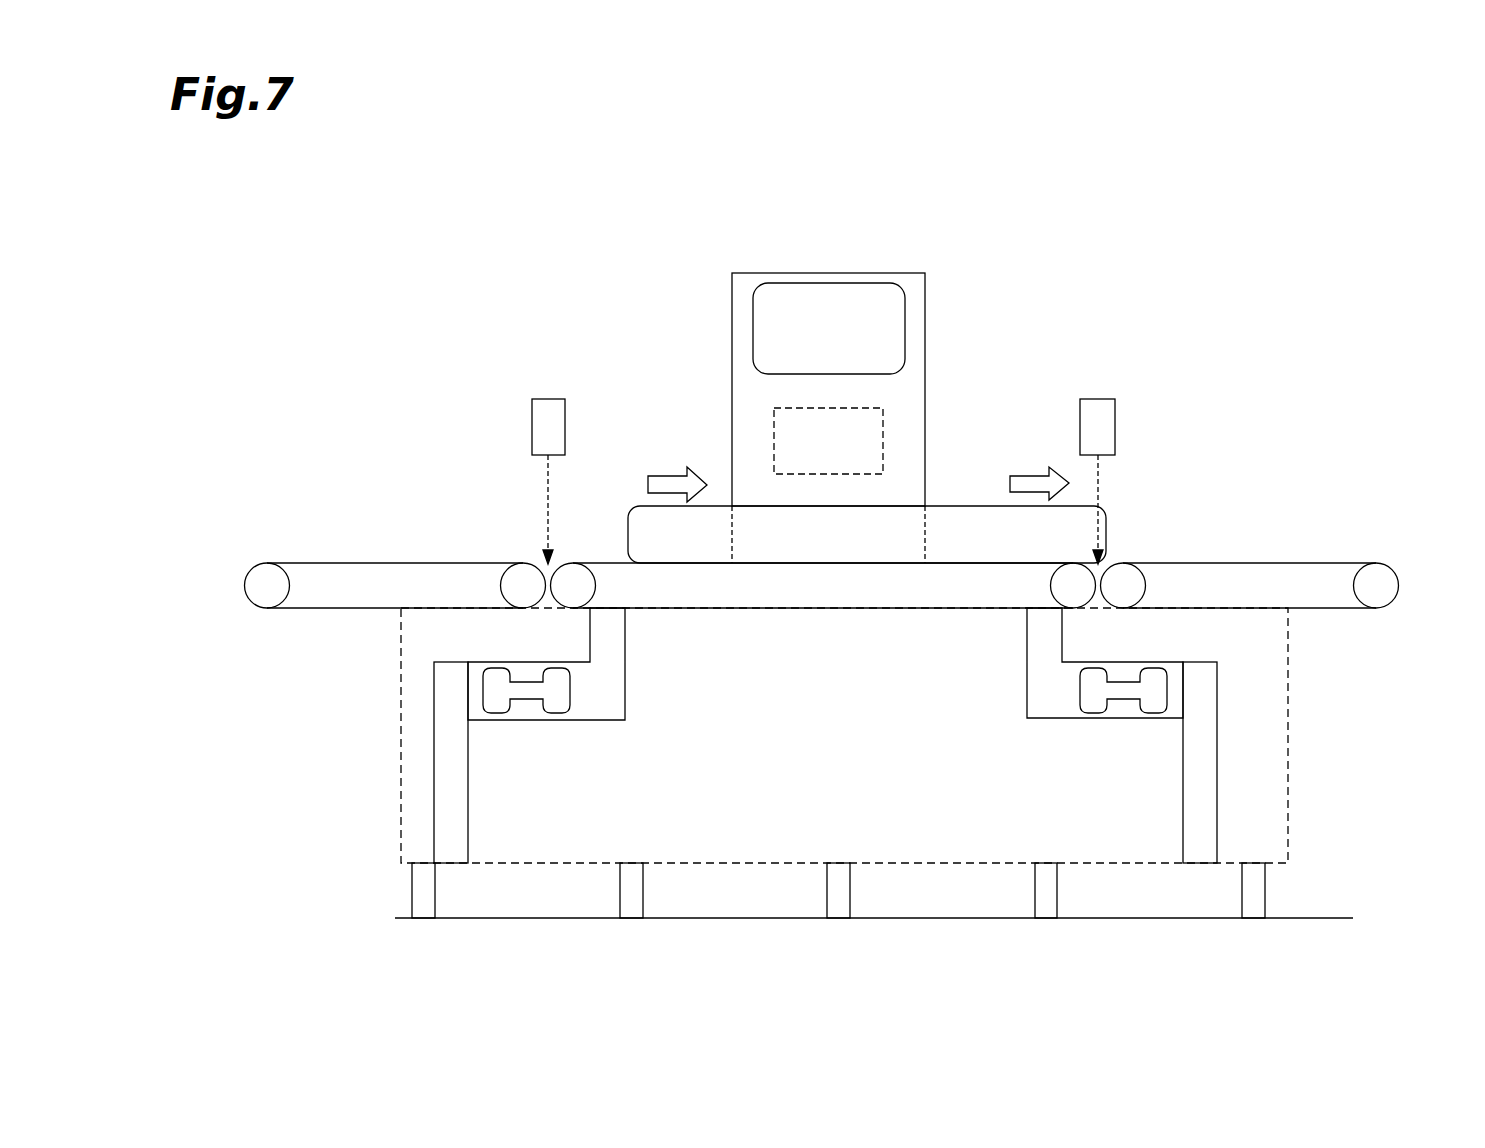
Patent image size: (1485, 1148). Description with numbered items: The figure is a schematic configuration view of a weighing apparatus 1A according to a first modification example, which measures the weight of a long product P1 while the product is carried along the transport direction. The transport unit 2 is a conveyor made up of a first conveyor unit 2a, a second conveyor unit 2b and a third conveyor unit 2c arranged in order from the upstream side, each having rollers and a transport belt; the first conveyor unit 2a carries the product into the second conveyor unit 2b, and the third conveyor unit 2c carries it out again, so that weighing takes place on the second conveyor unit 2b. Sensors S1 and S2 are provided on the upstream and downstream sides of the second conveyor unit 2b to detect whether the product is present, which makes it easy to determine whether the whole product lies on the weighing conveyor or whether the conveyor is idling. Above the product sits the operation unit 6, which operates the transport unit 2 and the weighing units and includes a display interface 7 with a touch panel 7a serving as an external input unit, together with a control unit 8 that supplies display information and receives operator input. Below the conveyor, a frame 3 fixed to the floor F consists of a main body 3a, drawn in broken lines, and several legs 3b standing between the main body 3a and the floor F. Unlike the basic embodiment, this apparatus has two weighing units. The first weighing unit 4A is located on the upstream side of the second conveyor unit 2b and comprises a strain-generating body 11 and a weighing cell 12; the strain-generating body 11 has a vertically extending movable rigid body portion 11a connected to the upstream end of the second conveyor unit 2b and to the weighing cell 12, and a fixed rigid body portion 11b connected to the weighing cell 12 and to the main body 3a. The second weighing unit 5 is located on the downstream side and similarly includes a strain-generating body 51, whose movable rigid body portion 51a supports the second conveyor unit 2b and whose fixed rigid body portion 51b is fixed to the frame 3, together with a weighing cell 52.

The weighing apparatus 1A is at (1224, 250).
The transport unit 2 is at (822, 535).
The first conveyor unit 2a is at (372, 580).
The second conveyor unit 2b is at (960, 582).
The third conveyor unit 2c is at (1268, 580).
The long product P1 is at (628, 530).
The operation unit 6 is at (907, 283).
The display interface 7 is at (817, 300).
The touch panel 7a is at (829, 328).
The control unit 8 is at (773, 425).
The sensor S1 is at (548, 399).
The sensor S2 is at (1098, 399).
The frame 3 is at (1366, 732).
The main body 3a is at (1290, 743).
The legs 3b is at (1047, 872).
The floor F is at (1315, 918).
The first weighing unit 4A is at (493, 648).
The strain-generating body 11 is at (694, 672).
The movable rigid body portion 11a is at (612, 685).
The fixed rigid body portion 11b is at (452, 752).
The weighing cell 12 is at (530, 690).
The second weighing unit 5 is at (1172, 652).
The strain-generating body 51 is at (954, 673).
The movable rigid body portion 51a is at (1040, 688).
The fixed rigid body portion 51b is at (1200, 762).
The weighing cell 52 is at (1118, 690).